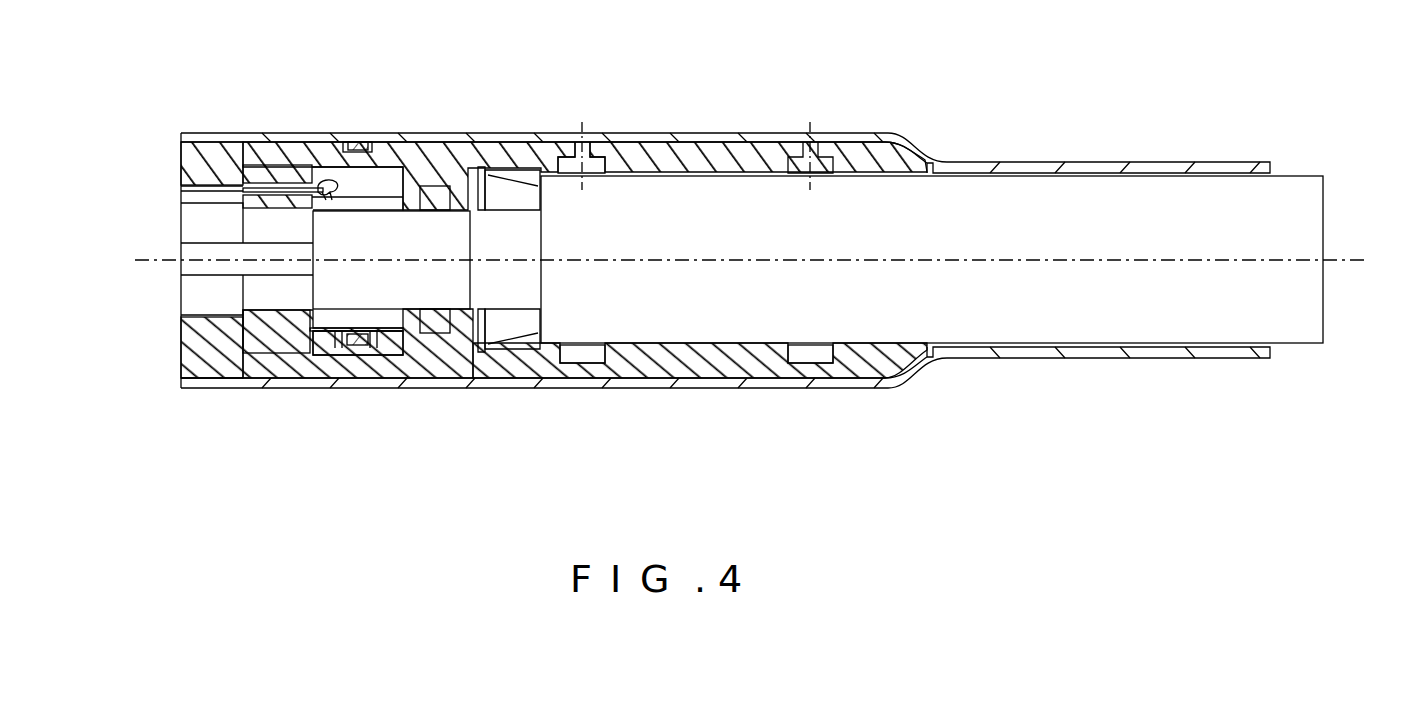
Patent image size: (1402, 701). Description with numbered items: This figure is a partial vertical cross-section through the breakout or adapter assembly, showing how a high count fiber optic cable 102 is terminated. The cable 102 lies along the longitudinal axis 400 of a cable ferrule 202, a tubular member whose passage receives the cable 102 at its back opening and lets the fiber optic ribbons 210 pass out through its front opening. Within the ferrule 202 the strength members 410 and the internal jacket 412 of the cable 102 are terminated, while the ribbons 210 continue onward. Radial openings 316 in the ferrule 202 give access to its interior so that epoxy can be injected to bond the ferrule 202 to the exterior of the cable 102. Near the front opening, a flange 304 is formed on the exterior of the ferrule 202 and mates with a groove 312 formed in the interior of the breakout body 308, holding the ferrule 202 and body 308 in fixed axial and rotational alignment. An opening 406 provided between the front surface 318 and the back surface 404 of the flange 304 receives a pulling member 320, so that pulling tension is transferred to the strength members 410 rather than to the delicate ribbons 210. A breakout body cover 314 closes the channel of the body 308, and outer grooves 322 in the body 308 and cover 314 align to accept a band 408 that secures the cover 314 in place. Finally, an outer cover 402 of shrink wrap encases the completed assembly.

The high count fiber optic cable 102 is at (1202, 240).
The cable ferrule 202 is at (665, 156).
The fiber optic ribbons 210 is at (190, 250).
The flange 304 is at (262, 337).
The breakout body 308 is at (192, 356).
The groove 312 is at (302, 366).
The breakout body cover 314 is at (185, 160).
The radial openings 316 is at (812, 185).
The front surface 318 is at (233, 195).
The pulling member 320 is at (340, 186).
The outer grooves 322 is at (350, 362).
The longitudinal axis 400 is at (1340, 258).
The outer cover 402 is at (1068, 162).
The back surface 404 is at (323, 186).
The opening 406 is at (258, 176).
The band 408 is at (360, 145).
The strength members 410 is at (503, 190).
The internal jacket 412 is at (462, 297).